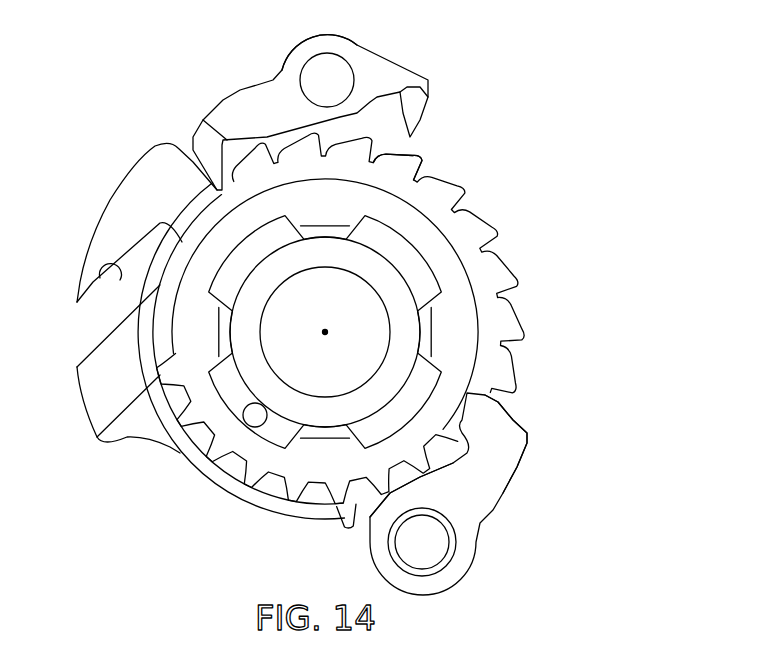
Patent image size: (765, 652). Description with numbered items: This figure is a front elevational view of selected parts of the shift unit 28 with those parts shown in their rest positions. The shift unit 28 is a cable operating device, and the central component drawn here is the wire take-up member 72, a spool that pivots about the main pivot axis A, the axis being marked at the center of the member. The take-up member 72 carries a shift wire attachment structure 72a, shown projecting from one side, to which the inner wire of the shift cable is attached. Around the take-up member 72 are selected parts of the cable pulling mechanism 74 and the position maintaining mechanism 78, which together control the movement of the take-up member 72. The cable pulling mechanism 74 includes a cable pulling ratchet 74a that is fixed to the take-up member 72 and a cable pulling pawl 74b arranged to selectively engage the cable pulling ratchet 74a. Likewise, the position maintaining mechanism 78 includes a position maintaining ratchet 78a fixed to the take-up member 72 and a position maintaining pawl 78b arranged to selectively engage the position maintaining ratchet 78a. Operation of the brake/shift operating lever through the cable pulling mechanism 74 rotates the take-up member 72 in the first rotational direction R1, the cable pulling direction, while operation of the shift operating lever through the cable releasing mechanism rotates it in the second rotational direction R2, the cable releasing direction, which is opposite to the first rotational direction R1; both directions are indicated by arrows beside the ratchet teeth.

The wire take-up member 72 is at (481, 215).
The shift wire attachment structure 72a is at (100, 278).
The cable pulling mechanism 74 is at (506, 537).
The cable pulling ratchet 74a is at (322, 470).
The cable pulling pawl 74b is at (505, 455).
The position maintaining mechanism 78 is at (406, 44).
The position maintaining ratchet 78a is at (432, 185).
The position maintaining pawl 78b is at (272, 73).
The shift unit 28 is at (550, 141).
The main pivot axis A is at (327, 333).
The first rotational direction R1 is at (564, 256).
The second rotational direction R2 is at (573, 353).